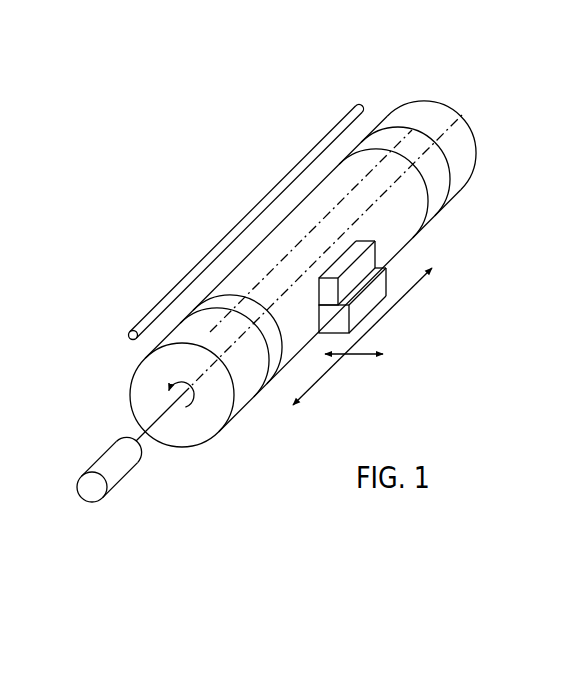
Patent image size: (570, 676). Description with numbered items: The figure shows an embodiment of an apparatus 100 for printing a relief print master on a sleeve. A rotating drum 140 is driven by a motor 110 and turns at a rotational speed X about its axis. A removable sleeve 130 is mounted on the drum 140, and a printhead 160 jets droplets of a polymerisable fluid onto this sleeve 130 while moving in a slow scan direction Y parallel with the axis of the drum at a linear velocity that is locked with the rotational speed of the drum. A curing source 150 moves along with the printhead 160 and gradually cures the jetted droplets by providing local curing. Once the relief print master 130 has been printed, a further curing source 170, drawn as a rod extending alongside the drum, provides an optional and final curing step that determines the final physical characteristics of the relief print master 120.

The apparatus 100 is at (163, 215).
The motor 110 is at (113, 470).
The relief print master 120 is at (412, 207).
The removable sleeve 130 is at (438, 183).
The rotating drum 140 is at (462, 152).
The curing source 150 is at (357, 313).
The printhead 160 is at (362, 267).
The curing source 170 is at (359, 100).